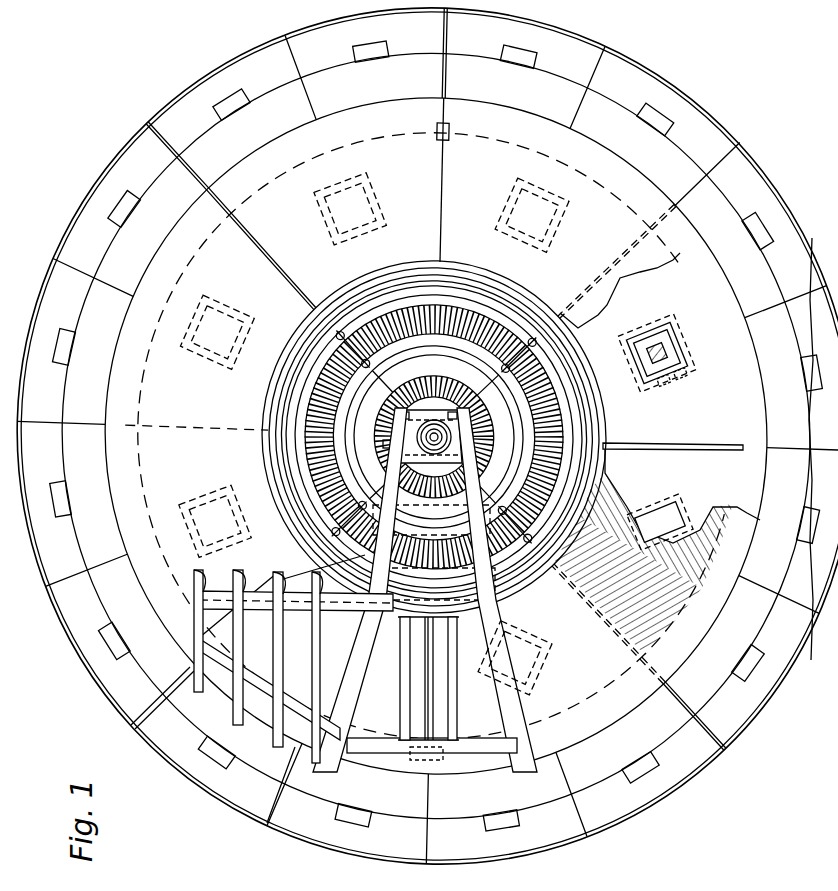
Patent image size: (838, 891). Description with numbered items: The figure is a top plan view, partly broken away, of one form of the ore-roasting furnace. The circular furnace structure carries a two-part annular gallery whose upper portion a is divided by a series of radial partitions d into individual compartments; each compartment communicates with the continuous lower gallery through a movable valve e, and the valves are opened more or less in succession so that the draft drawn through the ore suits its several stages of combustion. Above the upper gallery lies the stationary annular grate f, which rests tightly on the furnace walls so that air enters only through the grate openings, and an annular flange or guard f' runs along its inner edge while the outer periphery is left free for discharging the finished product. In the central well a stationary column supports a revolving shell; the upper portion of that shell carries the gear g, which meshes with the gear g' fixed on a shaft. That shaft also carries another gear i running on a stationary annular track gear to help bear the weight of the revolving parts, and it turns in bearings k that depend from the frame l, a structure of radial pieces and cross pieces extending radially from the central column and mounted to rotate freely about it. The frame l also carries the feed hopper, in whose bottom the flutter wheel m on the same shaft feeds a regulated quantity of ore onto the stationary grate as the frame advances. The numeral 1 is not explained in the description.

The outer building wall sections 1 is at (423, 439).
The stationary annular grate f is at (406, 424).
The annular flange or guard f' is at (424, 180).
The movable valve e is at (655, 333).
The radial partition d is at (673, 433).
The gear g is at (434, 426).
The gear g' is at (434, 436).
The frame l is at (425, 590).
The upper gallery portion a is at (432, 703).
The flutter wheel m is at (428, 678).
The gear i is at (400, 622).
The bearing k is at (262, 689).